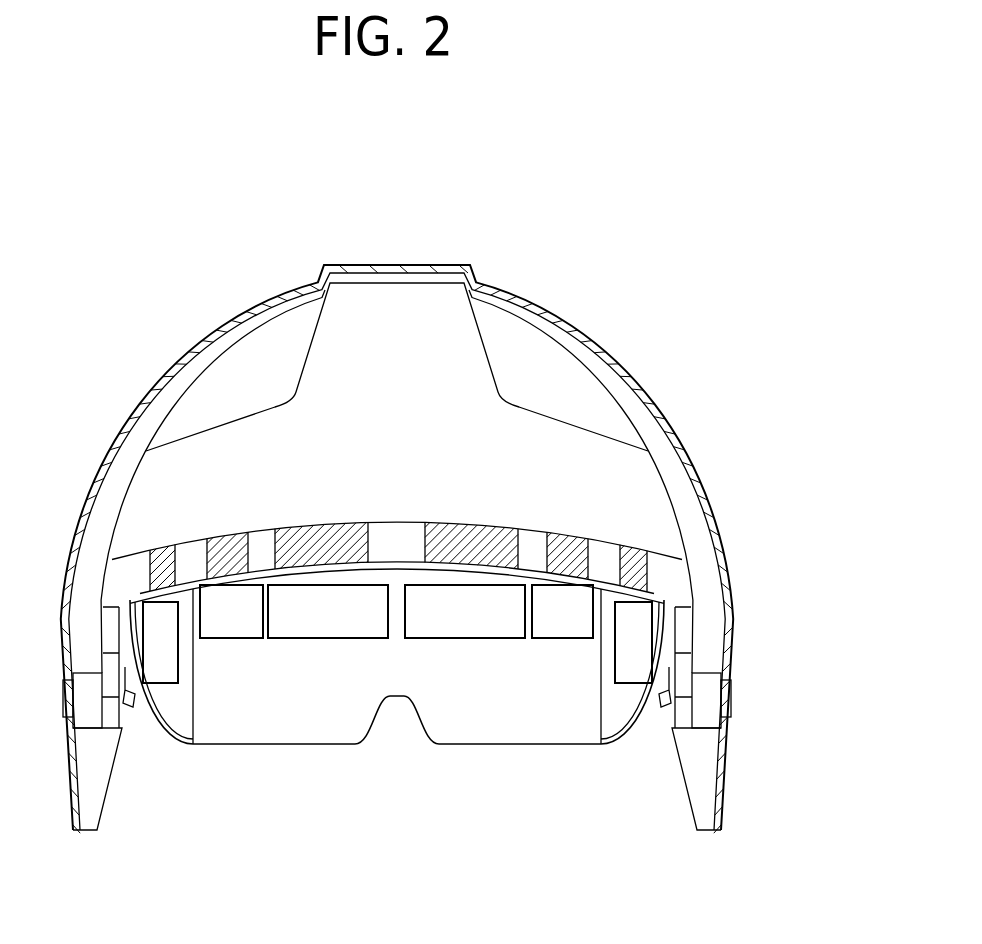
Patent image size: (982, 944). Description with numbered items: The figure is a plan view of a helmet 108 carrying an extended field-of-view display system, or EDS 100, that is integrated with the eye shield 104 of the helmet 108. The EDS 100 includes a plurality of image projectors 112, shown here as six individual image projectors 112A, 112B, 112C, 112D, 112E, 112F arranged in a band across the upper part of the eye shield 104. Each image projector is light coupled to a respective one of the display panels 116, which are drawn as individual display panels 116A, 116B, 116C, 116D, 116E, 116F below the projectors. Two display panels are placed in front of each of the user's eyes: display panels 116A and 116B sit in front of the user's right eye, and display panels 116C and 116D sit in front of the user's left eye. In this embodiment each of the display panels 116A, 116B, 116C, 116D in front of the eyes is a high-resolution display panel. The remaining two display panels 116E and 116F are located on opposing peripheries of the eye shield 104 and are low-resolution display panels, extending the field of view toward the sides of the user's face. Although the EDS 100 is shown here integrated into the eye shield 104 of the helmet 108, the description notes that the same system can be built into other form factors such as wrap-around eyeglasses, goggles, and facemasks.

The extended FOV display system 100 is at (397, 482).
The eye shield 104 is at (405, 702).
The helmet 108 is at (294, 262).
The image projectors 112 is at (397, 490).
The image projector 112A is at (320, 524).
The image projector 112B is at (227, 538).
The image projector 112C is at (447, 523).
The image projector 112D is at (560, 533).
The image projector 112E is at (163, 548).
The image projector 112F is at (626, 545).
The display panels 116 is at (405, 691).
The display panel 116A is at (326, 640).
The display panel 116B is at (230, 640).
The display panel 116C is at (477, 640).
The display panel 116D is at (567, 640).
The display panel 116E is at (170, 684).
The display panel 116F is at (633, 684).